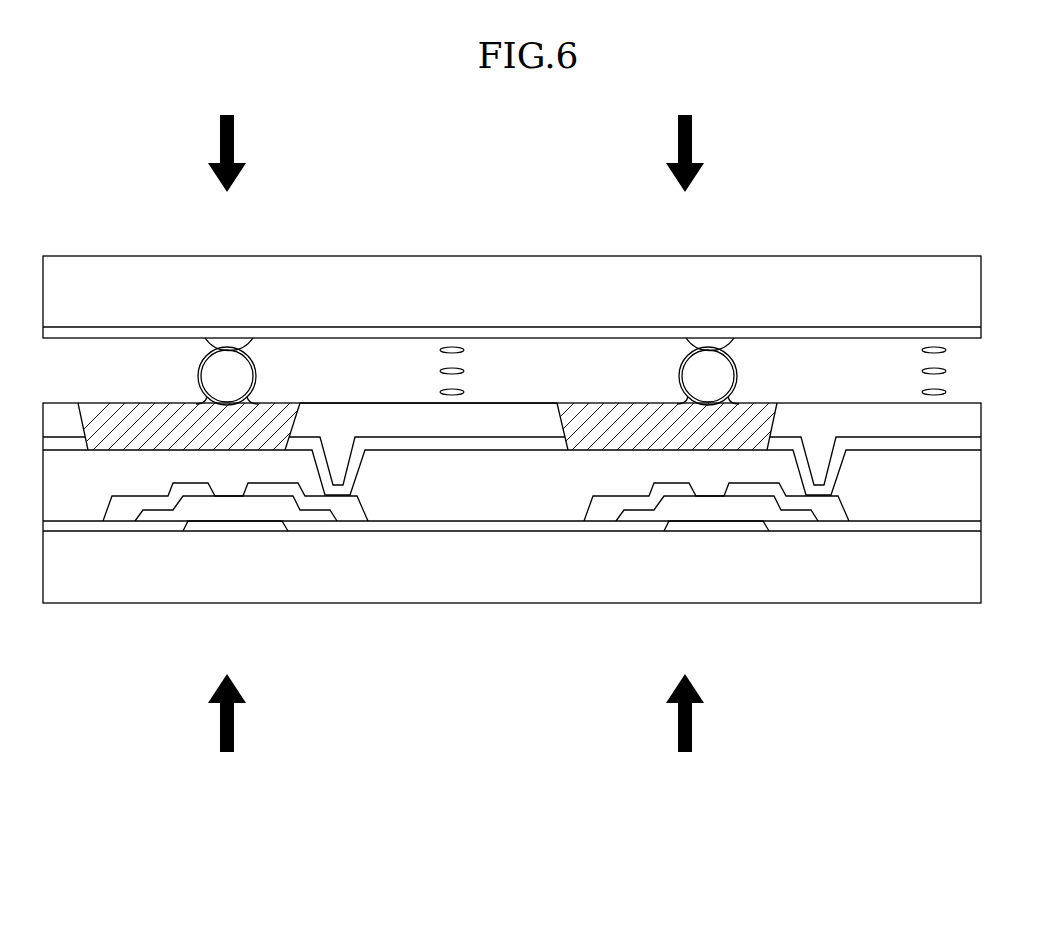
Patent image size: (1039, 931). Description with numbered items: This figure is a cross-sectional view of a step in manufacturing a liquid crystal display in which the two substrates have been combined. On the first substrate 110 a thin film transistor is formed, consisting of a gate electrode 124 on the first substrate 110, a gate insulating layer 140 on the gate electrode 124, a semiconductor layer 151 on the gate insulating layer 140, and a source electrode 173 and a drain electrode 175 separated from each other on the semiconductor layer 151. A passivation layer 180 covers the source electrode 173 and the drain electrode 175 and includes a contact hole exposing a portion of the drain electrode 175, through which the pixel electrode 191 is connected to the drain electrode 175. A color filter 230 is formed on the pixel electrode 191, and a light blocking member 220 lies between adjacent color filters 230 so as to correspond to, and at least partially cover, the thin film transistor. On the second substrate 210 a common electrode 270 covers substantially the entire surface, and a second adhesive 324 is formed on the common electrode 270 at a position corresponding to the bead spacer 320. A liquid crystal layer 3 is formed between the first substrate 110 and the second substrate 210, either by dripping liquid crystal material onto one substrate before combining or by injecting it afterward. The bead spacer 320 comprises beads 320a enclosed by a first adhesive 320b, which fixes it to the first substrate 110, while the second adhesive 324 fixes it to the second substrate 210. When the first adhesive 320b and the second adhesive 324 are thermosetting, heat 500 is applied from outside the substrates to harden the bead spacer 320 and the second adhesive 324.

The liquid crystal layer 3 is at (983, 340).
The first substrate 110 is at (592, 578).
The gate electrode 124 is at (215, 527).
The gate insulating layer 140 is at (427, 523).
The semiconductor layer 151 is at (257, 502).
The source electrode 173 is at (125, 512).
The drain electrode 175 is at (347, 512).
The passivation layer 180 is at (497, 495).
The pixel electrode 191 is at (390, 442).
The second substrate 210 is at (513, 275).
The light blocking member 220 is at (104, 423).
The color filter 230 is at (513, 415).
The common electrode 270 is at (392, 332).
The bead spacer 320 is at (426, 287).
The beads 320a is at (222, 363).
The first adhesive 320b is at (198, 370).
The second adhesive 324 is at (233, 342).
The heat 500 is at (235, 143).